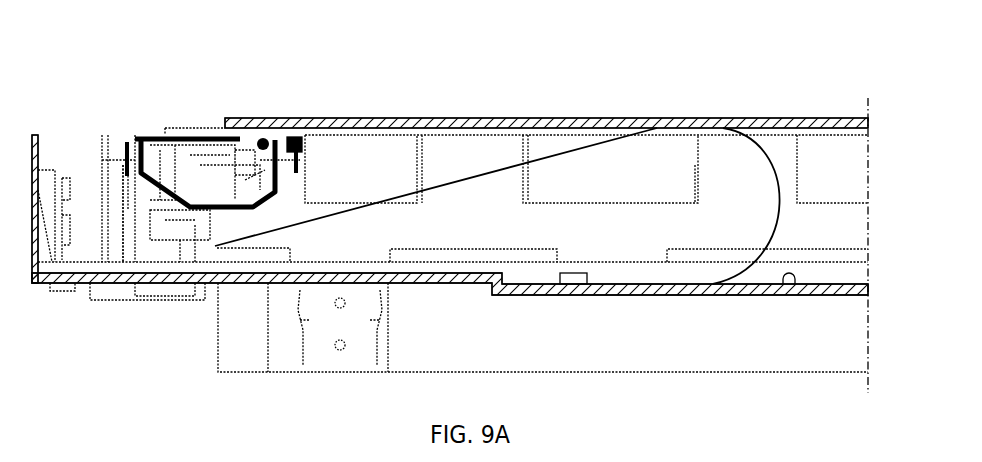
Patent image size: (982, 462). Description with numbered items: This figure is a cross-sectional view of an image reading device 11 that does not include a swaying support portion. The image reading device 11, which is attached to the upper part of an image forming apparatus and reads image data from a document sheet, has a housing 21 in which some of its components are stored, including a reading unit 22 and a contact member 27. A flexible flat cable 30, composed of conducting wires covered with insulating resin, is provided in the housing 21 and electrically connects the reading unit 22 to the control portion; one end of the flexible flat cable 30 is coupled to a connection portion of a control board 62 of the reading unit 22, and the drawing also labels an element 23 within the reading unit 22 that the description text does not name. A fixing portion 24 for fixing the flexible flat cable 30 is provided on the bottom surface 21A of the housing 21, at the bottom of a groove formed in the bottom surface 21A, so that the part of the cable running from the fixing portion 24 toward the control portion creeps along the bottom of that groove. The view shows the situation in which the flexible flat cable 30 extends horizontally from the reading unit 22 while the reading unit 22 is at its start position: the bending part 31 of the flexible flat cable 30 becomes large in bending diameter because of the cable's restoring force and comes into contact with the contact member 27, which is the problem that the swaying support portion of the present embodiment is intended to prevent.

The image reading device 11 is at (148, 347).
The housing 21 is at (670, 296).
The bottom surface 21A is at (793, 295).
The reading unit 22 is at (153, 121).
The light source block 23 is at (308, 150).
The fixing portion 24 is at (557, 284).
The contact member 27 is at (428, 119).
The flexible flat cable 30 is at (545, 153).
The bending part 31 is at (768, 153).
The control board 62 is at (128, 207).